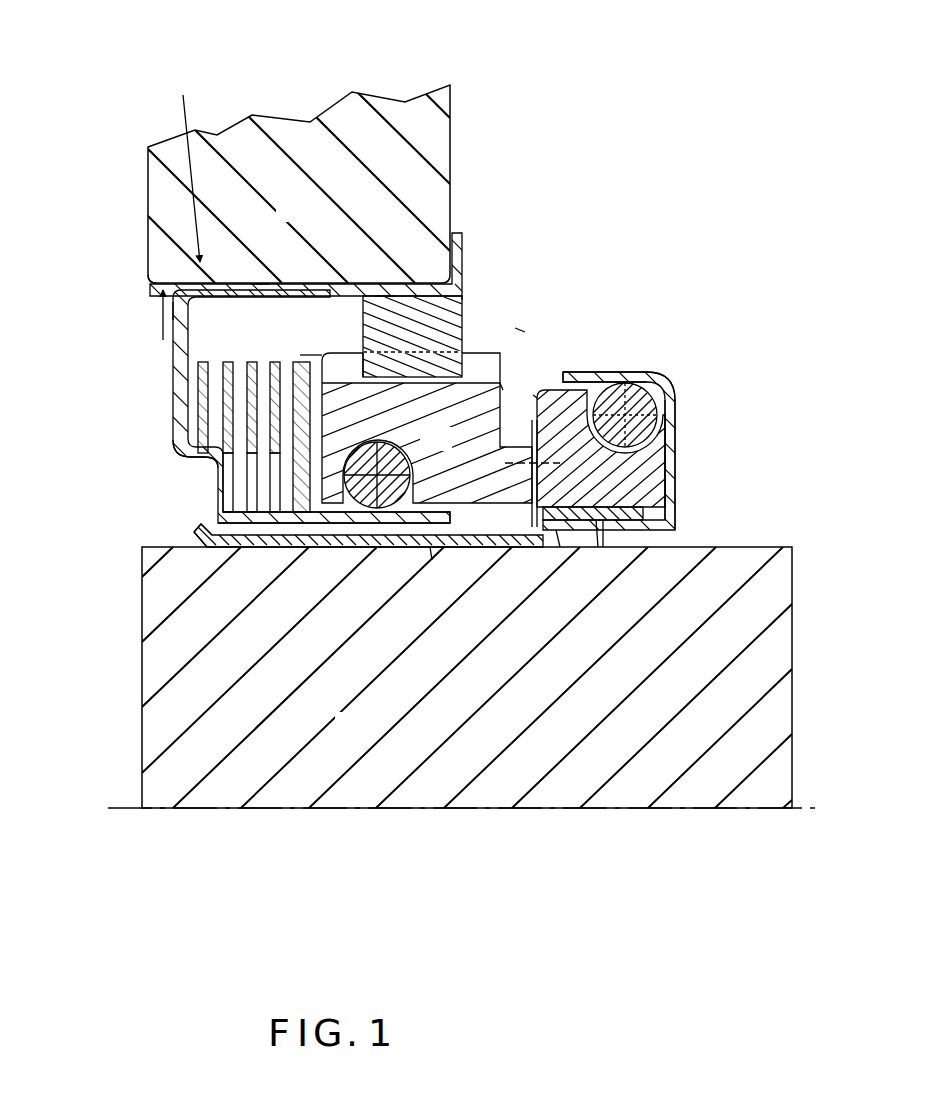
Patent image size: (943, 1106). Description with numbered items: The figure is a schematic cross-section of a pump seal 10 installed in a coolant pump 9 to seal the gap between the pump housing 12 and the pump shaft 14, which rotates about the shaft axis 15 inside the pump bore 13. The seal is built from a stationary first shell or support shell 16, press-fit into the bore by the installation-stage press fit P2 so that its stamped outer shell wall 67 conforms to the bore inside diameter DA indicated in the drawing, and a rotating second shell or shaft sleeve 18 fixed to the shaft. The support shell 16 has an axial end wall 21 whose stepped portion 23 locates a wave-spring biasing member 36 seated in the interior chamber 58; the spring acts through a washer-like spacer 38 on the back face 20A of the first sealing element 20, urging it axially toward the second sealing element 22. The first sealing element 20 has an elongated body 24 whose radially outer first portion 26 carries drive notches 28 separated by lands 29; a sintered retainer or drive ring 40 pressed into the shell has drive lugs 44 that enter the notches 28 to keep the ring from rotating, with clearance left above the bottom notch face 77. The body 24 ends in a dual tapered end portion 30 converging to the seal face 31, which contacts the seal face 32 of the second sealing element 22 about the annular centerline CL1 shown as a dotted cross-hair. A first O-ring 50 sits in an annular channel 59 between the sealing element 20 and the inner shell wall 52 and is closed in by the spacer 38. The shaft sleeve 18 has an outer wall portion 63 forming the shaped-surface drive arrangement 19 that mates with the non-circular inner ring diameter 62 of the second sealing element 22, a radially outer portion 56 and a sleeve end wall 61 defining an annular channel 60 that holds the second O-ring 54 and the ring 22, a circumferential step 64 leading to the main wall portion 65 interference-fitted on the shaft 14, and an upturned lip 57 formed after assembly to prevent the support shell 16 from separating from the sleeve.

The coolant pump 9 is at (680, 195).
The pump seal 10 is at (126, 293).
The pump housing 12 is at (310, 217).
The pump bore 13 is at (152, 292).
The pump shaft 14 is at (366, 738).
The shaft axis 15 is at (482, 812).
The first shell 16 is at (456, 242).
The second shell 18 is at (678, 456).
The shaped-surface drive arrangement 19 is at (603, 540).
The first sealing element 20 is at (493, 477).
The back face 20A is at (302, 360).
The axial end wall 21 is at (172, 372).
The second sealing element 22 is at (555, 378).
The stepped portion 23 is at (185, 458).
The elongated body 24 is at (451, 448).
The radially outer first portion 26 is at (360, 350).
The drive notch 28 is at (482, 360).
The land 29 is at (503, 383).
The dual tapered end portion 30 is at (505, 545).
The seal face 31 is at (550, 522).
The seal face 32 is at (533, 450).
The biasing member 36 is at (204, 370).
The spacer 38 is at (335, 480).
The retainer ring 40 is at (465, 297).
The drive lug 44 is at (445, 368).
The first O-ring 50 is at (320, 548).
The inner shell wall 52 is at (387, 528).
The second O-ring 54 is at (655, 416).
The radially outer portion 56 is at (647, 370).
The upturned lip 57 is at (198, 542).
The interior chamber 58 is at (260, 310).
The annular channel 59 is at (198, 525).
The annular channel 60 is at (678, 392).
The sleeve end wall 61 is at (678, 432).
The inner ring diameter 62 is at (678, 530).
The outer wall portion 63 is at (598, 522).
The circumferential step 64 is at (560, 540).
The main wall portion 65 is at (432, 540).
The outer shell wall 67 is at (383, 288).
The bottom notch face 77 is at (520, 328).
The installation-stage press fit P2 is at (188, 156).
The axial direction DA is at (162, 328).
The annular centerline CL1 is at (640, 475).